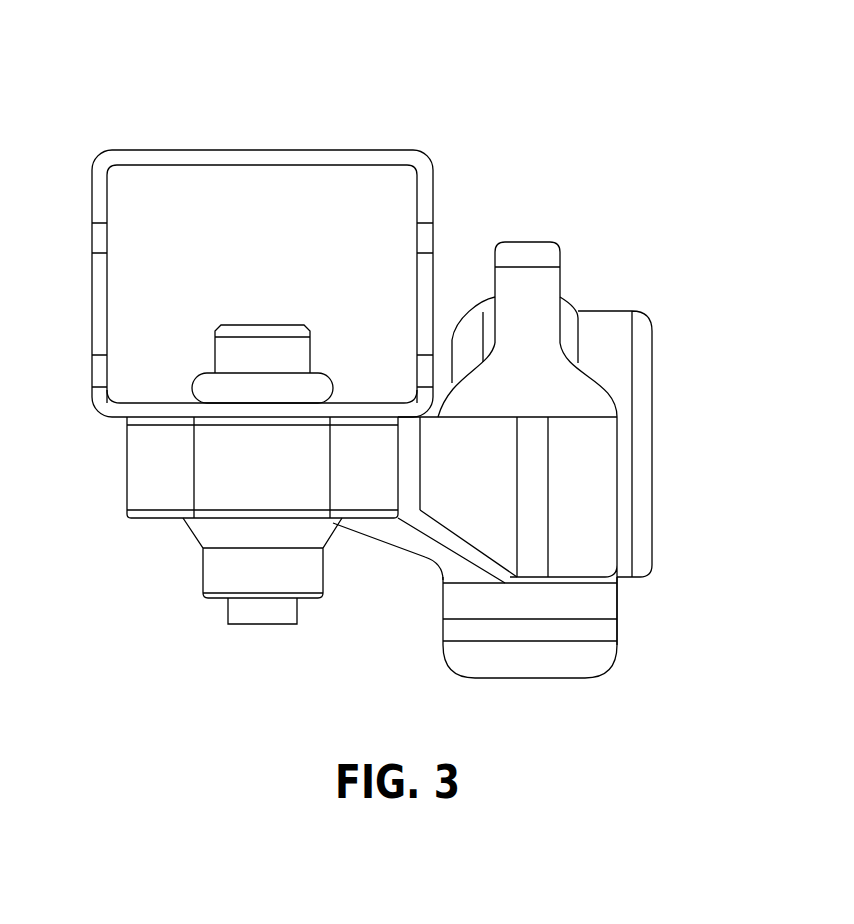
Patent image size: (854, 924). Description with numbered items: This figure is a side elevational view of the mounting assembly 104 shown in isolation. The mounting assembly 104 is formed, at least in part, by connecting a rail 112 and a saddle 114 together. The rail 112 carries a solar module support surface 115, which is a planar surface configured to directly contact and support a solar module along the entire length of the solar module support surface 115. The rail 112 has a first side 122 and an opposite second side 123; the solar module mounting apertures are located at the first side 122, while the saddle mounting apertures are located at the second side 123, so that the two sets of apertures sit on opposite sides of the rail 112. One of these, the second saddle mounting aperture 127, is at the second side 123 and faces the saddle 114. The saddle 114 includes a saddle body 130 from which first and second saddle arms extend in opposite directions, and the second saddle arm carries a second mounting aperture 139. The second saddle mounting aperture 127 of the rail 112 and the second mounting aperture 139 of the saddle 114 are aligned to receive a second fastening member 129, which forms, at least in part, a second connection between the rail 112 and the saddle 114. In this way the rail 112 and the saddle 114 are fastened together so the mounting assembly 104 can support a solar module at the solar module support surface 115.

The mounting assembly 104 is at (520, 150).
The rail 112 is at (148, 148).
The saddle 114 is at (656, 503).
The solar module support surface 115 is at (298, 150).
The first side 122 is at (222, 150).
The second side 123 is at (178, 403).
The second saddle mounting aperture 127 is at (337, 400).
The second fastening member 129 is at (238, 320).
The saddle body 130 is at (653, 372).
The second mounting aperture 139 is at (334, 428).